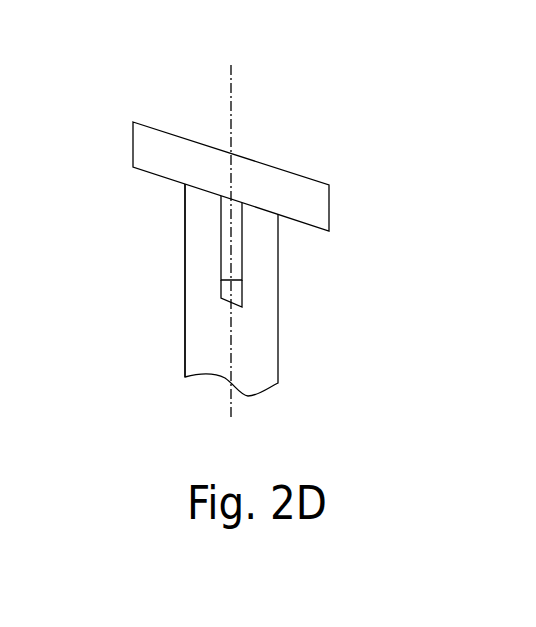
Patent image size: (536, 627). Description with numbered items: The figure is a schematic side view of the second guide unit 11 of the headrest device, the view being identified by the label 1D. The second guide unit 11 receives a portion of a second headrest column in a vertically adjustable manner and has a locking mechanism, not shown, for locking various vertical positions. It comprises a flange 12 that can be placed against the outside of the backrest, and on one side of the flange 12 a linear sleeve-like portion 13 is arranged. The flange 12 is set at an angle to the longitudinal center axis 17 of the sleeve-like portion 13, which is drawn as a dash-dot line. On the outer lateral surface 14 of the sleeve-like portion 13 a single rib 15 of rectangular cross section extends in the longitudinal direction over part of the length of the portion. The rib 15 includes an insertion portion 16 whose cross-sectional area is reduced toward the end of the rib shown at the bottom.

The embodiment of the tool / figure 1D variant 1D is at (270, 216).
The second guide unit 11 is at (270, 241).
The flange 12 is at (268, 180).
The sleeve-like portion 13 is at (203, 352).
The outer lateral surface 14 is at (185, 281).
The rib 15 is at (220, 243).
The insertion portion 16 is at (228, 283).
The longitudinal center axis 17 is at (229, 117).